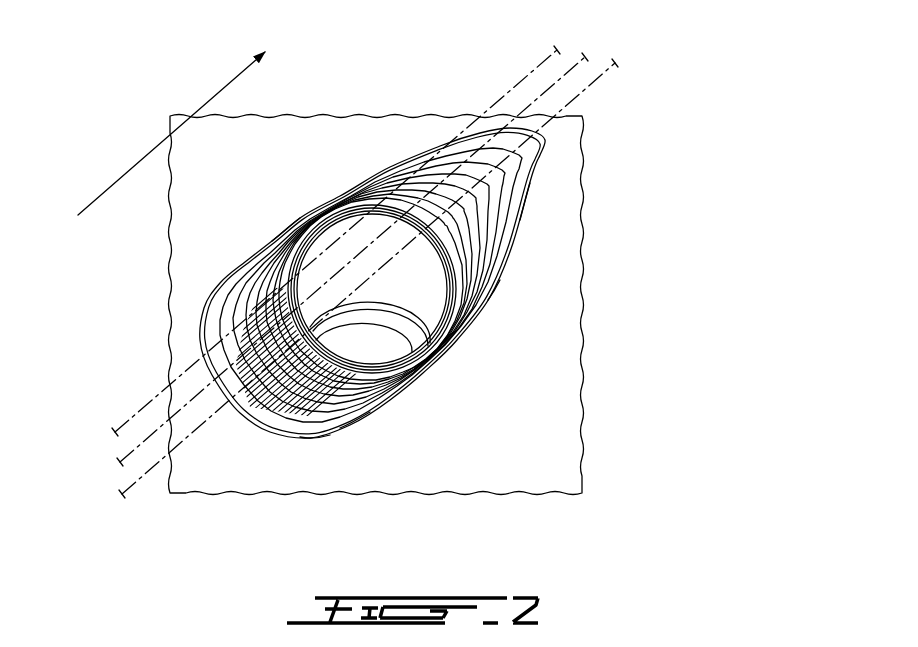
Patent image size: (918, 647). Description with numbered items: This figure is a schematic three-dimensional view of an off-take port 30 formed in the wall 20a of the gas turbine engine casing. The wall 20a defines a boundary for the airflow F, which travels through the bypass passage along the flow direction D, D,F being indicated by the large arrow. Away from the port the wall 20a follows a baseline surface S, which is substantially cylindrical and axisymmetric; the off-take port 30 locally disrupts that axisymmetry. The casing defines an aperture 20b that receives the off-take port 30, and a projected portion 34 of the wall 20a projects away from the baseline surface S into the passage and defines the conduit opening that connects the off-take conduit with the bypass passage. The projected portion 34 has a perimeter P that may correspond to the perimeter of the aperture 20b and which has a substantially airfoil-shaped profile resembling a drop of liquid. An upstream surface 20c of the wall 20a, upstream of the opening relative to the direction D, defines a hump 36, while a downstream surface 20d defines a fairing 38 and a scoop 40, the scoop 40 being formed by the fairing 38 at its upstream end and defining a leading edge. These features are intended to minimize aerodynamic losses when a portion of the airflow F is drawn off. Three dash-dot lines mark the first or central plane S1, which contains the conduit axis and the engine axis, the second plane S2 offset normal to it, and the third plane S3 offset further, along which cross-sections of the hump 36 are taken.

The wall 20a is at (553, 437).
The aperture 20b is at (286, 228).
The upstream surface 20c is at (316, 418).
The downstream surface 20d is at (524, 184).
The off-take port 30 is at (560, 215).
The projected portion 34 is at (282, 405).
The hump 36 is at (352, 398).
The fairing 38 is at (490, 186).
The scoop 40 is at (460, 266).
The perimeter P is at (493, 295).
The baseline surface S is at (503, 455).
The first plane S1 is at (615, 63).
The second plane S2 is at (585, 57).
The third plane S3 is at (557, 50).
The flow direction and airflow D,F is at (128, 170).